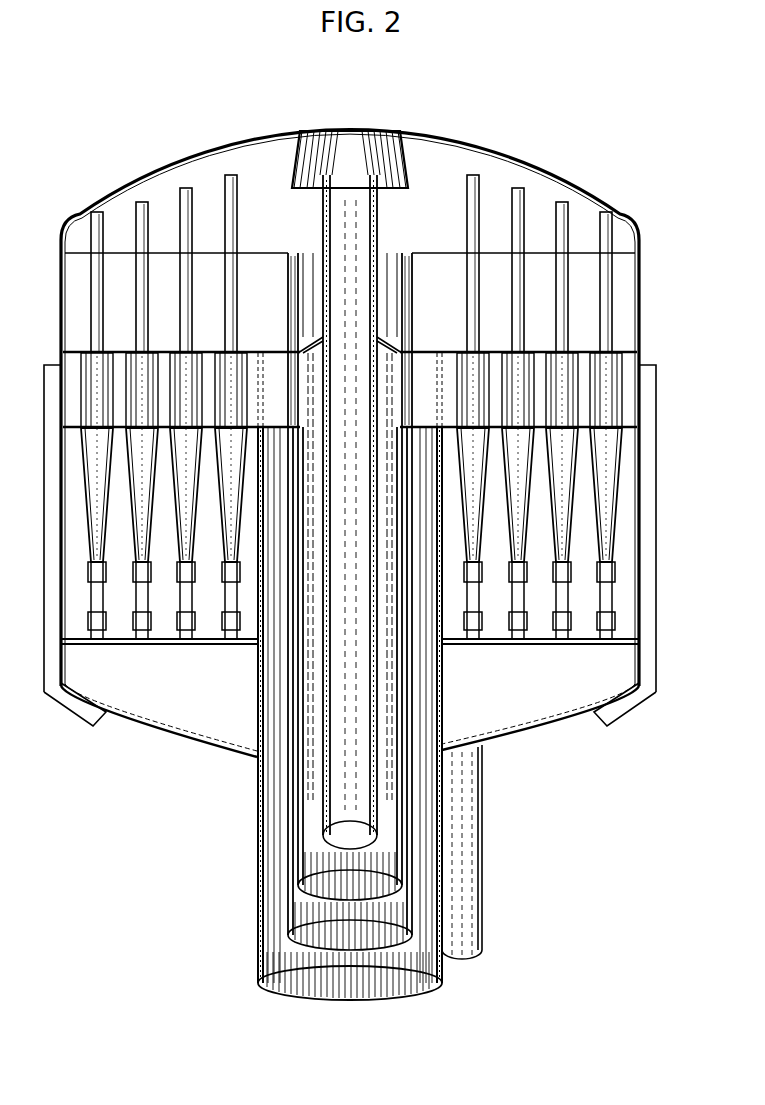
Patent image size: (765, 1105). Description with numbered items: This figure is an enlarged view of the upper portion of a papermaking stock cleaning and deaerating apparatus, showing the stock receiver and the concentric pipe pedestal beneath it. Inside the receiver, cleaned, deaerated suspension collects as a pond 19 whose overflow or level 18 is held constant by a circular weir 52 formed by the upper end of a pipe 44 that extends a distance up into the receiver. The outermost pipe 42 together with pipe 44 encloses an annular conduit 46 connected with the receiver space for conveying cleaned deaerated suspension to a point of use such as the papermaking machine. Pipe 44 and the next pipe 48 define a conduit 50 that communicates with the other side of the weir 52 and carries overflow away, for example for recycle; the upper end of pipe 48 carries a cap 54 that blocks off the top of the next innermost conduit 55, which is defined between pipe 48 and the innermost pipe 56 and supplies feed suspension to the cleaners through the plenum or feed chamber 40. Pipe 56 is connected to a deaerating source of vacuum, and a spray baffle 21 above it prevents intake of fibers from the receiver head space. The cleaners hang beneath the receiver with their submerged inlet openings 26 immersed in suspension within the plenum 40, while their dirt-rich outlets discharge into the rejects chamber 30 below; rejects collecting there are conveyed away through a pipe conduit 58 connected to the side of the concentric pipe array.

The level 18 is at (255, 253).
The pond 19 is at (270, 288).
The spray baffle 21 is at (405, 162).
The submerged inlet openings 26 is at (643, 357).
The rejects chamber 30 is at (488, 692).
The plenum or feed chamber 40 is at (577, 387).
The pipe 42 is at (438, 978).
The pipe 44 is at (412, 883).
The conduit 46 is at (423, 918).
The pipe 48 is at (398, 843).
The conduit 50 is at (402, 800).
The circular weir 52 is at (408, 320).
The cap 54 is at (395, 345).
The conduit 55 is at (298, 857).
The pipe 56 is at (323, 793).
The pipe conduit 58 is at (480, 942).